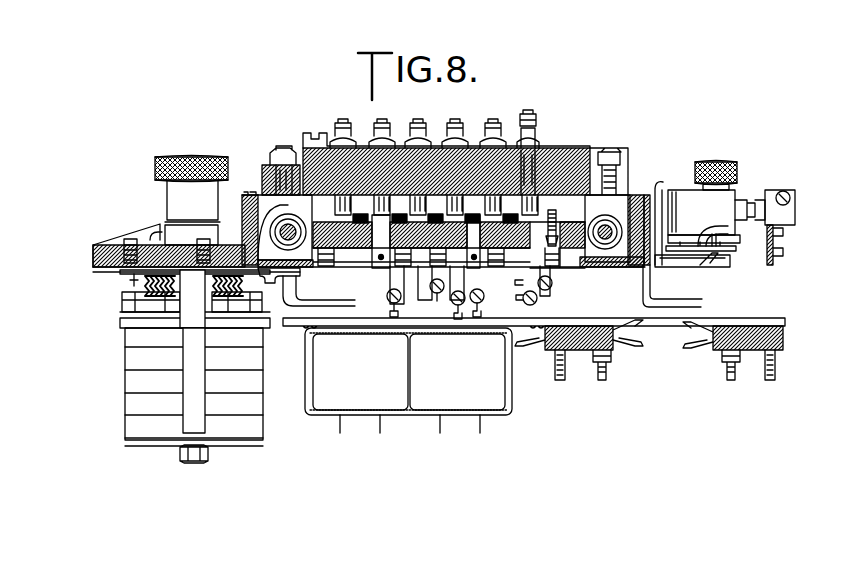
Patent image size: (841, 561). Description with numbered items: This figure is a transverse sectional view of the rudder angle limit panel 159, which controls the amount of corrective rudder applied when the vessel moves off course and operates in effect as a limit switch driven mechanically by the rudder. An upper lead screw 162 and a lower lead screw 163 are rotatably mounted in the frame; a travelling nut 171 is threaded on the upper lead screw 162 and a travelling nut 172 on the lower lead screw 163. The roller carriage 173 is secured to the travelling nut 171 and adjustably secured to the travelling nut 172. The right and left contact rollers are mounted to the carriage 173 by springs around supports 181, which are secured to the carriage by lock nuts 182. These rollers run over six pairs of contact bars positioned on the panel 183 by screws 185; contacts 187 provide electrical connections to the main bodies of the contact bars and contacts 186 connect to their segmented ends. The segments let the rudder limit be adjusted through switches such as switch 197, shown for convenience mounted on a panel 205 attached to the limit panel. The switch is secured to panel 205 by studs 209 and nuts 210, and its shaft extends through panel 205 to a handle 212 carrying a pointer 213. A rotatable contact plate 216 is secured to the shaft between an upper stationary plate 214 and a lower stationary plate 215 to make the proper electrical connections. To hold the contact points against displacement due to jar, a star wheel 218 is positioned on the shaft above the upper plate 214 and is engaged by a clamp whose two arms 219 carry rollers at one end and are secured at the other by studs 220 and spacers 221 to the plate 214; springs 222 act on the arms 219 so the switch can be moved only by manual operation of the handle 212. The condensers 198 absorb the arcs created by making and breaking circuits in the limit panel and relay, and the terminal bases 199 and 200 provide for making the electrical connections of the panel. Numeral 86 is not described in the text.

The base plate 86 is at (586, 200).
The rudder angle limit panel 159 is at (643, 265).
The upper lead screw 162 is at (610, 224).
The lower lead screw 163 is at (285, 227).
The travelling nut 171 is at (607, 214).
The travelling nut 172 is at (302, 216).
The roller carriage 173 is at (590, 150).
The supports 181 is at (534, 142).
The lock nuts 182 is at (537, 127).
The panel 183 is at (345, 248).
The screws 185 is at (551, 212).
The contacts 186 is at (541, 281).
The contacts 187 is at (511, 268).
The switch 197 is at (192, 212).
The condensers 198 is at (408, 380).
The terminal base 199 is at (617, 332).
The terminal base 200 is at (784, 331).
The panel 205 is at (97, 263).
The studs 209 is at (188, 377).
The nuts 210 is at (205, 452).
The handle 212 is at (156, 166).
The pointer 213 is at (165, 238).
The upper stationary plate 214 is at (283, 328).
The lower stationary plate 215 is at (263, 440).
The rotatable contact plate 216 is at (194, 380).
The star wheel 218 is at (207, 306).
The arms 219 is at (125, 302).
The studs 220 is at (135, 292).
The spacers 221 is at (125, 314).
The springs 222 is at (150, 276).